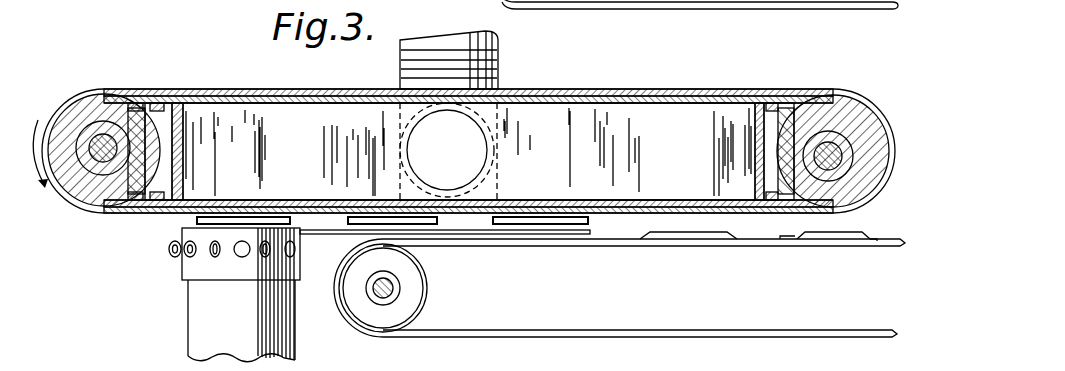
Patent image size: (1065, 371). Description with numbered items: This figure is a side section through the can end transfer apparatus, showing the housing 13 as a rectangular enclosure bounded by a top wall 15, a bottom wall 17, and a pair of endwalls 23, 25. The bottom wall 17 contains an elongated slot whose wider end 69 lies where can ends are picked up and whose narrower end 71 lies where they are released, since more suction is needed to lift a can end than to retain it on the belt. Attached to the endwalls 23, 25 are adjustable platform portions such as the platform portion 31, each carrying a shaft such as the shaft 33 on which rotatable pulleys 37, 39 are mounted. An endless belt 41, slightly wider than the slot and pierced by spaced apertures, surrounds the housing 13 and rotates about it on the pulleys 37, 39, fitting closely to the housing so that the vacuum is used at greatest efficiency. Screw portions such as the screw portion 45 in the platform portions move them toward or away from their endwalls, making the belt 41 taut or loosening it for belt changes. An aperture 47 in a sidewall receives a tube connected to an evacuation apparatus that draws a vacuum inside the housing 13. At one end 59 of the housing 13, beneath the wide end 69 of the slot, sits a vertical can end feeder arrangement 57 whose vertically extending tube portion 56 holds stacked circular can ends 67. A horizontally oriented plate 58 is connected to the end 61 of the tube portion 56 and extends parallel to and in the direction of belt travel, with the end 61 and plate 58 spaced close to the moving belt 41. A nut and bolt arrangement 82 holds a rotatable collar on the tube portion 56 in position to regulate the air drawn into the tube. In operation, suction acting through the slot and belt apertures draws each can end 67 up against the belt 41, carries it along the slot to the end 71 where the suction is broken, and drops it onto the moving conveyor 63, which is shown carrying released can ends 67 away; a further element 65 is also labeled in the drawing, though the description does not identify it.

The housing 13 is at (682, 114).
The top wall 15 is at (733, 100).
The bottom wall 17 is at (643, 204).
The endwall 23 is at (800, 96).
The endwall 25 is at (160, 100).
The adjustable platform portion 31 is at (143, 210).
The shaft 33 is at (866, 205).
The pulley 37 is at (860, 122).
The pulley 39 is at (76, 92).
The endless belt 41 is at (846, 99).
The screw portion 45 is at (136, 100).
The aperture 47 is at (406, 60).
The tube portion 56 is at (186, 319).
The can end feeder arrangement 57 is at (182, 352).
The plate 58 is at (330, 238).
The end 59 is at (182, 214).
The end 61 is at (290, 220).
The conveyor 63 is at (676, 9).
The upper belt run 65 is at (644, 303).
The can end 67 is at (697, 242).
The end of slot 69 is at (172, 212).
The end of slot 71 is at (560, 204).
The nut and bolt arrangement 82 is at (174, 252).